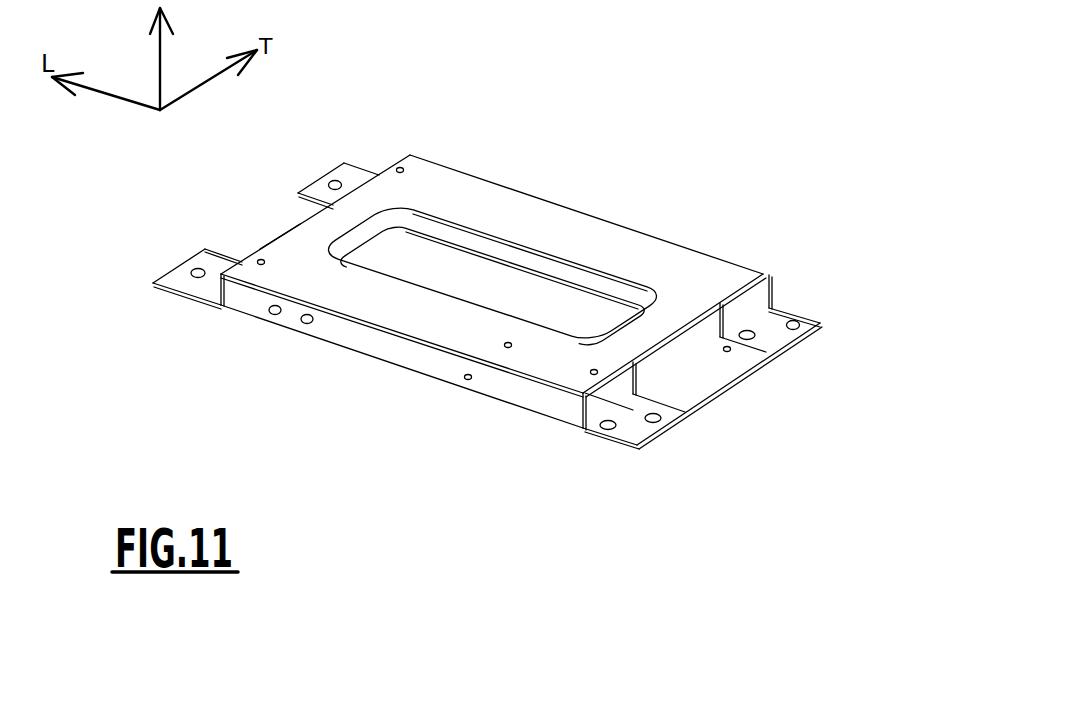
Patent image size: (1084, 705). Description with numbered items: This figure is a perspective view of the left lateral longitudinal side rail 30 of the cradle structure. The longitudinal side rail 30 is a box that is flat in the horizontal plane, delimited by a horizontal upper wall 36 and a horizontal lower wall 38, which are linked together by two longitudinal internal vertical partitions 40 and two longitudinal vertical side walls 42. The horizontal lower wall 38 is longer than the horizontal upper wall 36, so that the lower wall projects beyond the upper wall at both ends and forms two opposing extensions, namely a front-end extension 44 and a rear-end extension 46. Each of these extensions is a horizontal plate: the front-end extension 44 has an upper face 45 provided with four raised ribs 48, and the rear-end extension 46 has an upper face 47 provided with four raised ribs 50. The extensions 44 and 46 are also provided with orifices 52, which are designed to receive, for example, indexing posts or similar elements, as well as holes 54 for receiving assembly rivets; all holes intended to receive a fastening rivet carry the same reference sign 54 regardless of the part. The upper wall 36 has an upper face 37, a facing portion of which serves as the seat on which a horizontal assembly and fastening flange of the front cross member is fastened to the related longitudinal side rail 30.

The longitudinal side rail 30 is at (685, 233).
The horizontal upper wall 36 is at (488, 193).
The upper face of the upper wall 37 is at (643, 257).
The horizontal lower wall 38 is at (737, 404).
The longitudinal internal vertical partitions 40 is at (635, 373).
The longitudinal vertical side walls 42 is at (772, 288).
The front-end extension 44 is at (233, 217).
The upper face of the front-end extension 45 is at (223, 243).
The rear-end extension 46 is at (662, 377).
The upper face of the rear-end extension 47 is at (780, 337).
The raised ribs 48 is at (303, 195).
The raised ribs 50 is at (788, 311).
The orifices 52 is at (347, 183).
The holes 54 is at (256, 345).